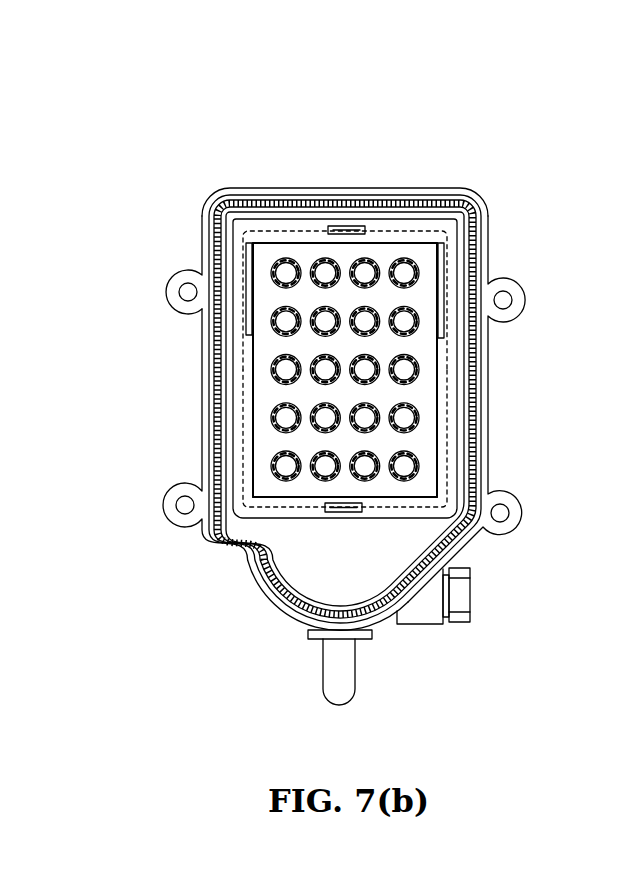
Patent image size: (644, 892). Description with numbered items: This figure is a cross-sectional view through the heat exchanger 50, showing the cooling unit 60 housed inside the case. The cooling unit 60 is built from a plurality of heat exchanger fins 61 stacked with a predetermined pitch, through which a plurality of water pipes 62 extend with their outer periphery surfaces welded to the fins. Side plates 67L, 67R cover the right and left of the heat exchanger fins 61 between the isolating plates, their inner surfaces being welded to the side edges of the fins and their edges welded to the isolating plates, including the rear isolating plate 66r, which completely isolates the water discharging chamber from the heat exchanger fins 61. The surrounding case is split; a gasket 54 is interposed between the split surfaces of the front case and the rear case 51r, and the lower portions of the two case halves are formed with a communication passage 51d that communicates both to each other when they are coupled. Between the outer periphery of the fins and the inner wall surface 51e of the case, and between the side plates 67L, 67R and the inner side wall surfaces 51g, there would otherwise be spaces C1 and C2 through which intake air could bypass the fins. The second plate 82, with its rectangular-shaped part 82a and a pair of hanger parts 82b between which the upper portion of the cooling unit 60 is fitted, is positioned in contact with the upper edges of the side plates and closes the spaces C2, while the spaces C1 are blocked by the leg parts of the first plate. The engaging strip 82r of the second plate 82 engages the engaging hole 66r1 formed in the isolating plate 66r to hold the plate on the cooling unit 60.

The heat exchanger 50 is at (397, 407).
The inner wall surface 51e is at (287, 222).
The rear case 51r is at (489, 349).
The communication passage 51d is at (317, 553).
The gasket 54 is at (252, 552).
The inner side wall surface 51g is at (223, 338).
The second plate 82 is at (418, 242).
The rectangular-shaped part 82a is at (205, 213).
The hanger part 82b is at (250, 298).
The engaging strip 82r is at (352, 228).
The space C1 is at (228, 440).
The space C2 is at (231, 250).
The engaging hole 66r1 is at (328, 230).
The isolating plate 66r is at (443, 512).
The cooling unit 60 is at (392, 530).
The heat exchanger fin 61 is at (423, 483).
The water pipe 62 is at (270, 263).
The side plate 67R is at (253, 403).
The side plate 67L is at (437, 412).